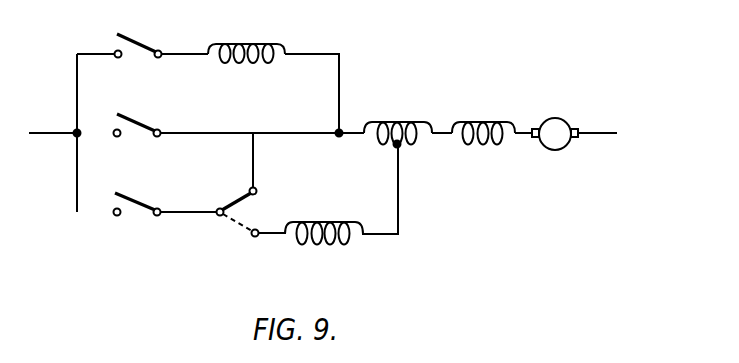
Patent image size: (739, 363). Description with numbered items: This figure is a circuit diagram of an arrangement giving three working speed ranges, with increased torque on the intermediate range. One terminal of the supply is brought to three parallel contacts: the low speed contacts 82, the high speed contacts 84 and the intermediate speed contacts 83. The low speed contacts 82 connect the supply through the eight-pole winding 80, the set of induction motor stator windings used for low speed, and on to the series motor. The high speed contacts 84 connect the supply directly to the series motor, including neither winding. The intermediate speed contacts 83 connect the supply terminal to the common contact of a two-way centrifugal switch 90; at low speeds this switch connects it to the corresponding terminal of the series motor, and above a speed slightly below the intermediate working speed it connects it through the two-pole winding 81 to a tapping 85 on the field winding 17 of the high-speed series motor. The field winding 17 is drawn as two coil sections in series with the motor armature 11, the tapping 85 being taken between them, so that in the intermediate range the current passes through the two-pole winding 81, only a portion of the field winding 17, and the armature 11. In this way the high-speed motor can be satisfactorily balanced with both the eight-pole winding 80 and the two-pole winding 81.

The motor 11 is at (558, 128).
The field winding 17 is at (405, 122).
The eight-pole winding 80 is at (243, 43).
The two-pole winding 81 is at (305, 222).
The low speed contacts 82 is at (118, 45).
The intermediate speed contacts 83 is at (130, 211).
The high speed contacts 84 is at (131, 137).
The tapping 85 is at (399, 146).
The two-way centrifugal switch 90 is at (243, 198).